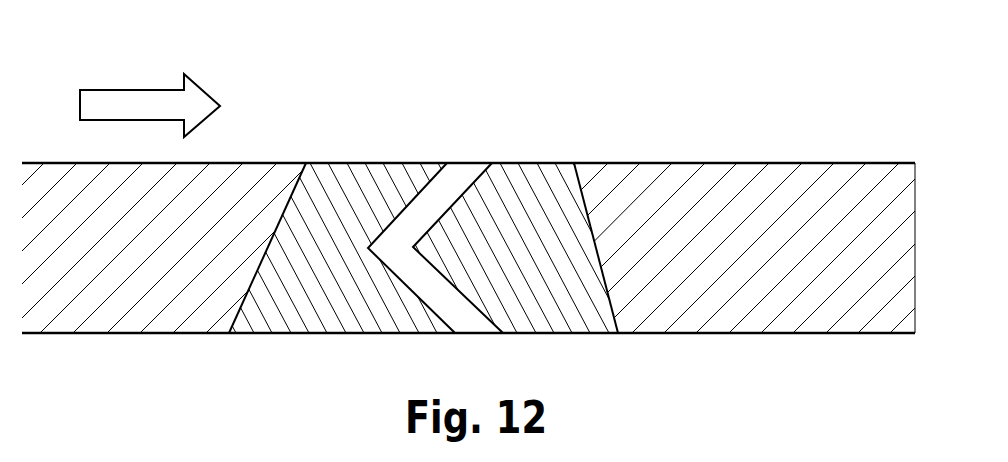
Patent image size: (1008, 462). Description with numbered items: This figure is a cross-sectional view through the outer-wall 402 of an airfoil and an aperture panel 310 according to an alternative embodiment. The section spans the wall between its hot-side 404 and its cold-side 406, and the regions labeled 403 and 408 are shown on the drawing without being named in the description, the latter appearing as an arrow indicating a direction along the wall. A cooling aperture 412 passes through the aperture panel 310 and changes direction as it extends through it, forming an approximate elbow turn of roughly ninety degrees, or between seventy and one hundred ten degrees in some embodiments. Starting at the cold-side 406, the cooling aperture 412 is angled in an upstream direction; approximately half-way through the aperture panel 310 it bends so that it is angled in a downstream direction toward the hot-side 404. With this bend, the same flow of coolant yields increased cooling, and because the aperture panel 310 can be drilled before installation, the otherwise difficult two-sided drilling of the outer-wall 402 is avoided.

The direction of material flow arrow 408 is at (140, 108).
The hot-side 404 is at (657, 162).
The cold-side 406 is at (687, 333).
The first sheet section 403 is at (140, 277).
The cooling aperture 412 is at (417, 213).
The aperture panel 310 is at (528, 232).
The outer-wall 402 is at (767, 250).